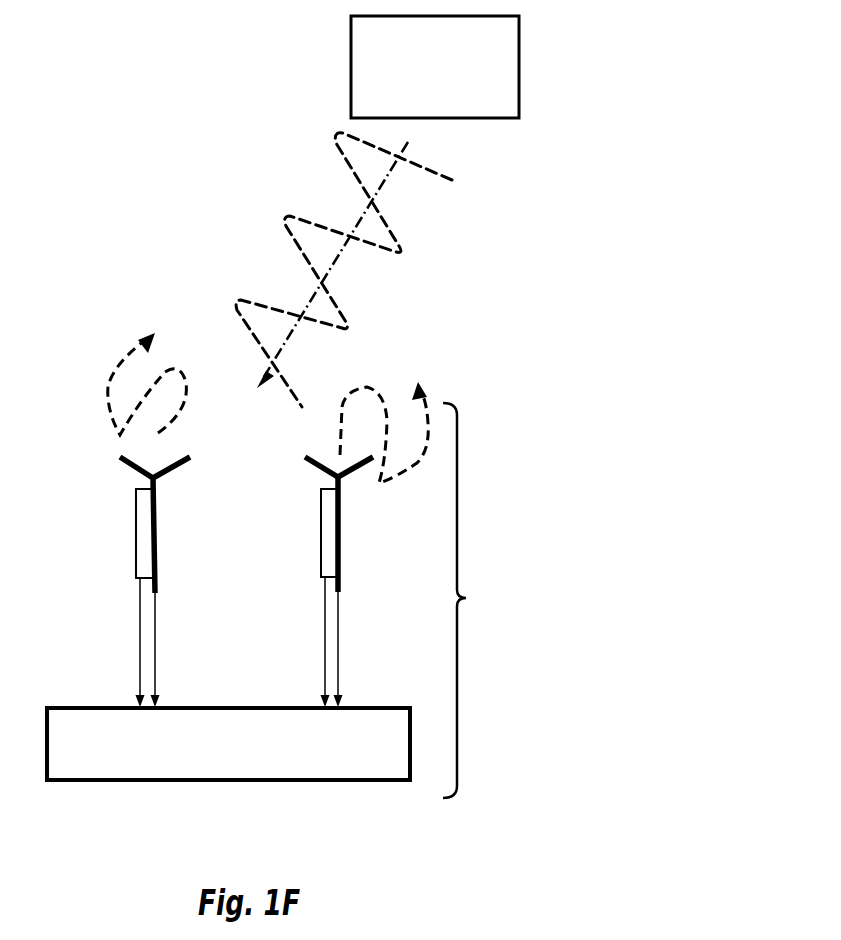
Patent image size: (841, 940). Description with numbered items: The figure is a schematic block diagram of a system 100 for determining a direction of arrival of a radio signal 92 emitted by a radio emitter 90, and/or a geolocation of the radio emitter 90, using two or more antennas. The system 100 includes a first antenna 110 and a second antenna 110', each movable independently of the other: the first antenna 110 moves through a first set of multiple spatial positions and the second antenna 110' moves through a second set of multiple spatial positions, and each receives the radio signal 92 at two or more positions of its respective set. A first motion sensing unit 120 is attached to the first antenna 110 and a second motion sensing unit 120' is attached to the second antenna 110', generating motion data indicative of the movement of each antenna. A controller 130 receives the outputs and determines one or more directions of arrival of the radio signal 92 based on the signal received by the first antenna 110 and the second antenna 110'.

The radio emitter 90 is at (351, 66).
The radio signal 92 is at (264, 215).
The system 100 is at (477, 600).
The first antenna 110 is at (121, 463).
The second antenna 110' is at (332, 487).
The first motion sensing unit 120 is at (111, 598).
The second motion sensing unit 120' is at (295, 598).
The controller 130 is at (112, 707).